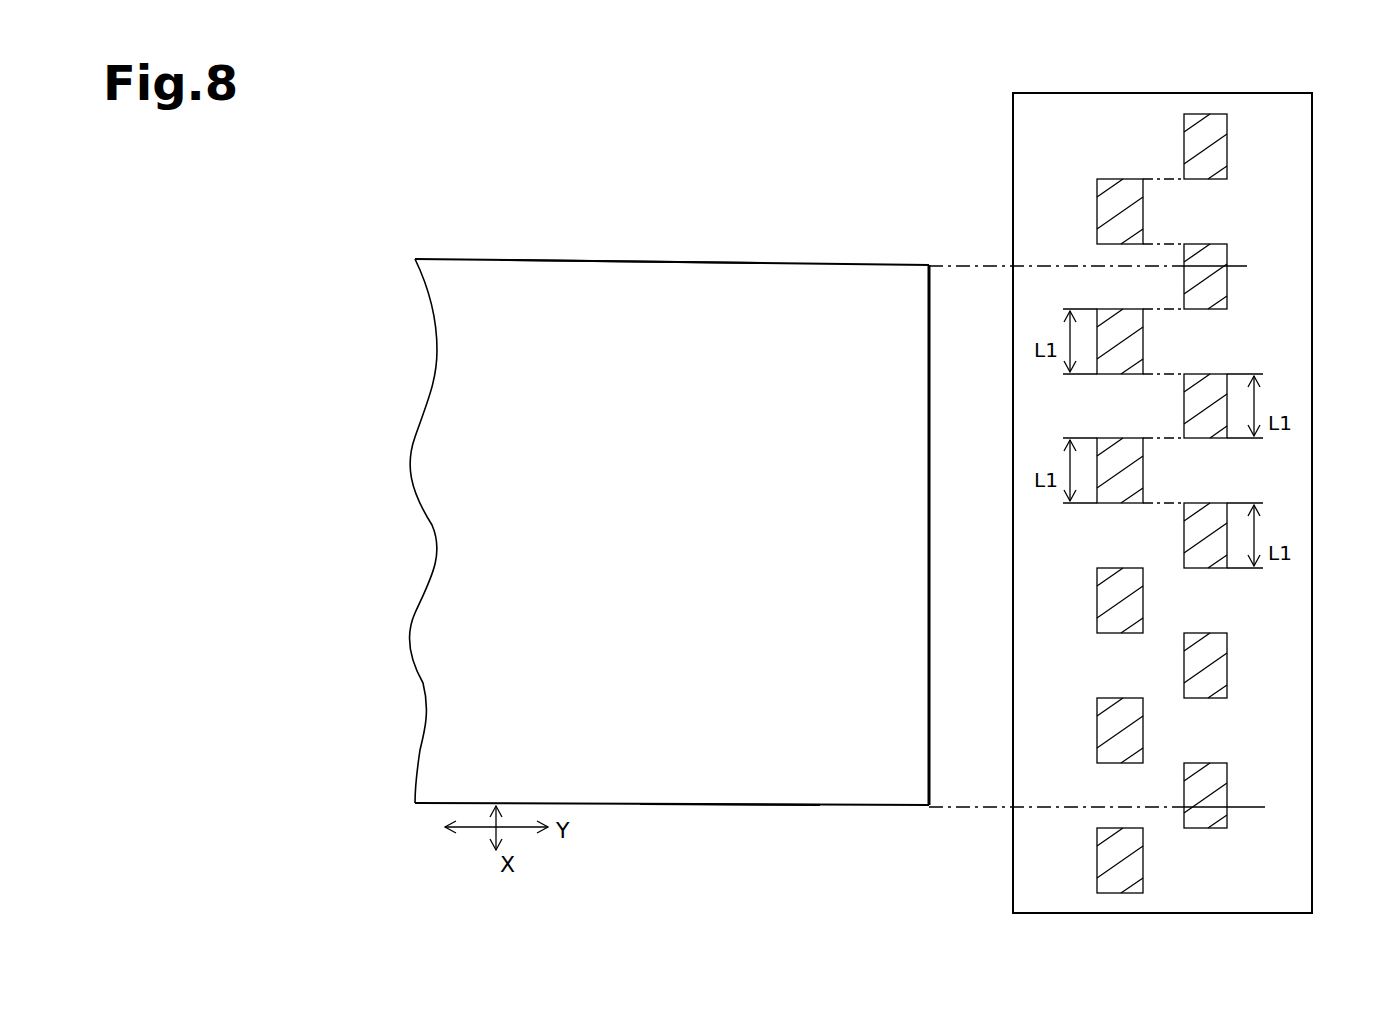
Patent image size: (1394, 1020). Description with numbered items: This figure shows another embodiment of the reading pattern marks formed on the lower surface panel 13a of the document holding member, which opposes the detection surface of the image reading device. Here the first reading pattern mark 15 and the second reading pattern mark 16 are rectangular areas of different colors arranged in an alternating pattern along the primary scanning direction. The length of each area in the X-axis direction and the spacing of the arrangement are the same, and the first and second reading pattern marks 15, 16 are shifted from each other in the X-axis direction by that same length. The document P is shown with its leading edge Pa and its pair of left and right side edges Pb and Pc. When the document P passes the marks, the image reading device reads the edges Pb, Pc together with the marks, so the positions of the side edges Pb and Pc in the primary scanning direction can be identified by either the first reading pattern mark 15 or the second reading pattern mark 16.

The first reading pattern mark 15 is at (1092, 211).
The second reading pattern mark 16 is at (1218, 151).
The lower surface panel 13a is at (1282, 783).
The document P is at (645, 808).
The leading edge Pa is at (929, 680).
The left width edge Pb is at (732, 806).
The right width edge Pc is at (606, 261).